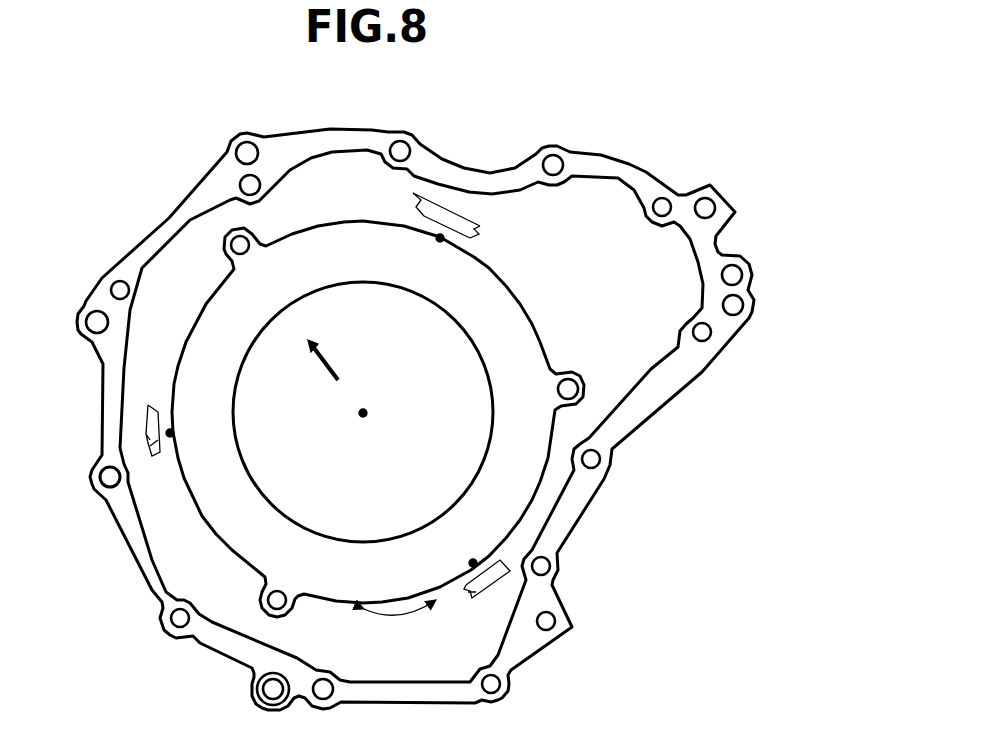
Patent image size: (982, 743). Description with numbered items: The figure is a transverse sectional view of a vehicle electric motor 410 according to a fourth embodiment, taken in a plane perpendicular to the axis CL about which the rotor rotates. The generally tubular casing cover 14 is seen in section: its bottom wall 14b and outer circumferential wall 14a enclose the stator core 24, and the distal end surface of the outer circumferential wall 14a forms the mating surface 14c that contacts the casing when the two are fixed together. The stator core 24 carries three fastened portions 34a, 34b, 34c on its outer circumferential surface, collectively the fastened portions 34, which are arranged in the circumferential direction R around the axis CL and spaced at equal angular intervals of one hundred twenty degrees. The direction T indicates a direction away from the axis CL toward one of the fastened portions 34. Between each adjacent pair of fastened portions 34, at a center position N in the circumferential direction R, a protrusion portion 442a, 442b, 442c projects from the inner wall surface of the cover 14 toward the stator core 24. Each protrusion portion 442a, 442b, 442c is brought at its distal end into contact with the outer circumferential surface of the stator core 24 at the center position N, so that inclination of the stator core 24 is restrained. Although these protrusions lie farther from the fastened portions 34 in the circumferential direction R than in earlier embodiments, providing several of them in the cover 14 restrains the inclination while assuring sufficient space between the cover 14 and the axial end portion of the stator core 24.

The electric motor 410 is at (740, 94).
The casing cover 14 is at (666, 157).
The outer circumferential wall 14a is at (333, 130).
The bottom wall 14b is at (320, 212).
The mating surface 14c is at (107, 433).
The fastened portions 34 is at (387, 430).
The fastened portion 34a is at (278, 613).
The fastened portion 34b is at (226, 248).
The fastened portion 34c is at (565, 352).
The stator core 24 is at (320, 307).
The protrusion portion 442a is at (152, 458).
The protrusion portion 442b is at (424, 212).
The protrusion portion 442c is at (464, 598).
The center position N is at (436, 240).
The direction T is at (323, 366).
The axis CL is at (358, 413).
The circumferential direction R is at (403, 619).